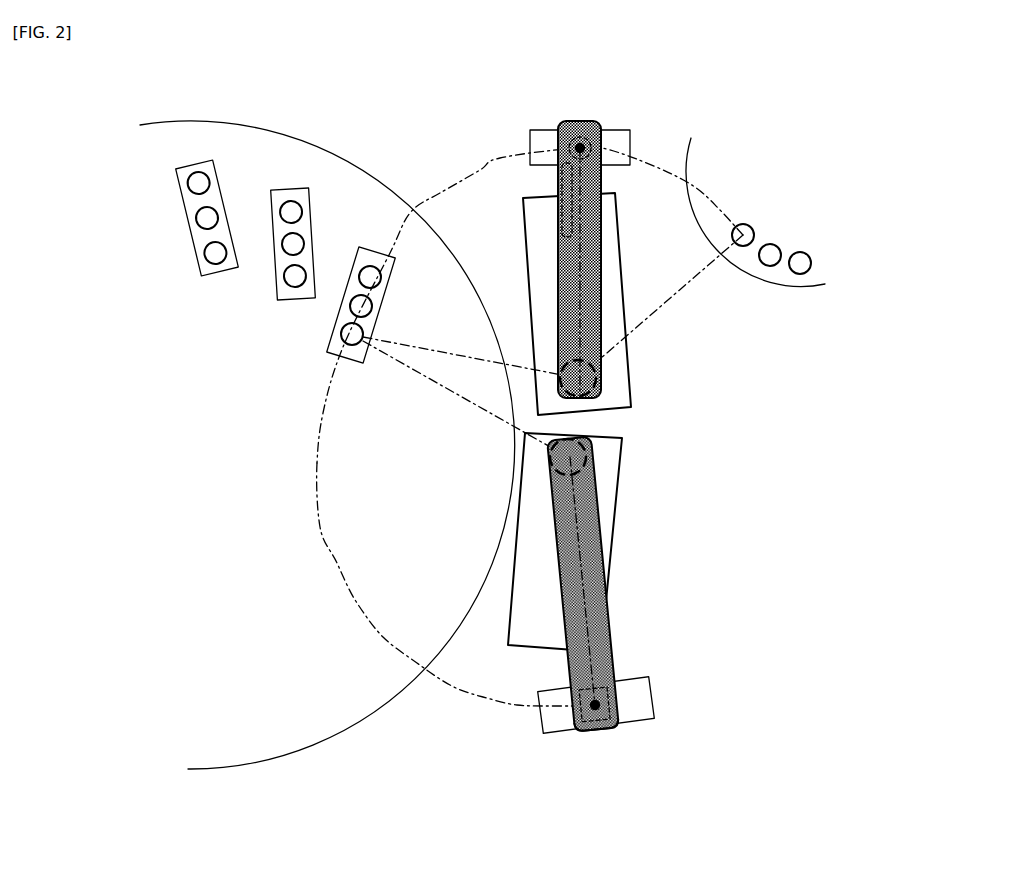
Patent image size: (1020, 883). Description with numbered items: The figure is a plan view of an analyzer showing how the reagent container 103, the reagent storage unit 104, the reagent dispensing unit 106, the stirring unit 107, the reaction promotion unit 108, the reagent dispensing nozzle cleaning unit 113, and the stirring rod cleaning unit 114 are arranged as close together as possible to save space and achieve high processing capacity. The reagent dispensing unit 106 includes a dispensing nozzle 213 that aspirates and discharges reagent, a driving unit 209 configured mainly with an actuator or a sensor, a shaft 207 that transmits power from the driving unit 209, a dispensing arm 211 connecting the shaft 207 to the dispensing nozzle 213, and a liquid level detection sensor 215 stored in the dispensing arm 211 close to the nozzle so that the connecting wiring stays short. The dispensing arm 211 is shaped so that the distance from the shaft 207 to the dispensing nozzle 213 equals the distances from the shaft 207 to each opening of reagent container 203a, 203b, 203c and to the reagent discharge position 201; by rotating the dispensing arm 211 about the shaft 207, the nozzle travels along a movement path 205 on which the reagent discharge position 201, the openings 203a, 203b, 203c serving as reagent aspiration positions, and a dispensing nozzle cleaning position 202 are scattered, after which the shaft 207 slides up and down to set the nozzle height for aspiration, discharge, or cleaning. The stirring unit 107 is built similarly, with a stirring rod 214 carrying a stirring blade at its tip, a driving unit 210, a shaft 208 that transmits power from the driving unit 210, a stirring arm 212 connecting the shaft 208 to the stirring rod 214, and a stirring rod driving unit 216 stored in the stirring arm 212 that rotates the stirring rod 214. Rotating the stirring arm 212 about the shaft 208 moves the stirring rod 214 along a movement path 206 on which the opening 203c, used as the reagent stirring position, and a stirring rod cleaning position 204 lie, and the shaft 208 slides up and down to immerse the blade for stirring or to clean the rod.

The reagent container 103 is at (373, 262).
The reagent storage unit 104 is at (328, 160).
The reagent dispensing unit 106 is at (513, 232).
The stirring unit 107 is at (622, 562).
The reaction promotion unit 108 is at (768, 284).
The reagent dispensing nozzle cleaning unit 113 is at (540, 130).
The stirring rod cleaning unit 114 is at (567, 733).
The reagent discharge position 201 is at (741, 246).
The dispensing nozzle cleaning position 202 is at (584, 142).
The opening of reagent container 203a is at (381, 276).
The opening of reagent container 203b is at (373, 306).
The opening of reagent container 203c is at (340, 335).
The stirring rod cleaning position 204 is at (602, 717).
The movement path 205 is at (479, 168).
The movement path 206 is at (452, 688).
The shaft 207 is at (600, 375).
The shaft 208 is at (548, 461).
The driving unit 209 is at (618, 222).
The driving unit 210 is at (516, 648).
The dispensing arm 211 is at (598, 188).
The stirring arm 212 is at (612, 651).
The dispensing nozzle 213 is at (574, 140).
The stirring rod 214 is at (602, 705).
The liquid level detection sensor 215 is at (558, 186).
The stirring rod driving unit 216 is at (598, 720).